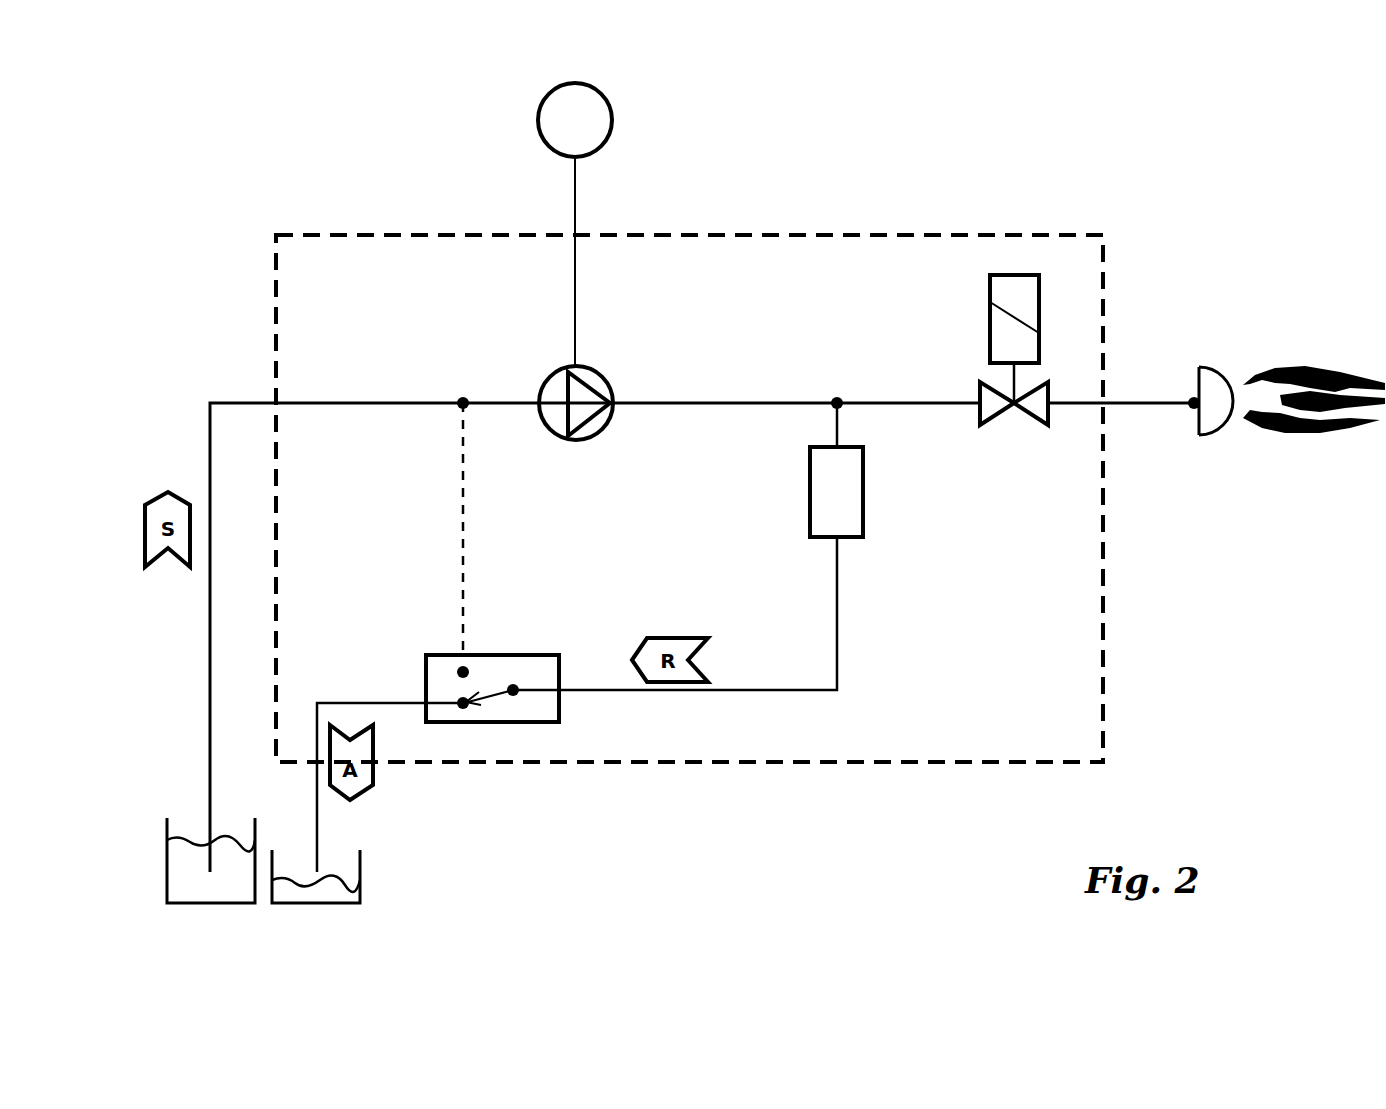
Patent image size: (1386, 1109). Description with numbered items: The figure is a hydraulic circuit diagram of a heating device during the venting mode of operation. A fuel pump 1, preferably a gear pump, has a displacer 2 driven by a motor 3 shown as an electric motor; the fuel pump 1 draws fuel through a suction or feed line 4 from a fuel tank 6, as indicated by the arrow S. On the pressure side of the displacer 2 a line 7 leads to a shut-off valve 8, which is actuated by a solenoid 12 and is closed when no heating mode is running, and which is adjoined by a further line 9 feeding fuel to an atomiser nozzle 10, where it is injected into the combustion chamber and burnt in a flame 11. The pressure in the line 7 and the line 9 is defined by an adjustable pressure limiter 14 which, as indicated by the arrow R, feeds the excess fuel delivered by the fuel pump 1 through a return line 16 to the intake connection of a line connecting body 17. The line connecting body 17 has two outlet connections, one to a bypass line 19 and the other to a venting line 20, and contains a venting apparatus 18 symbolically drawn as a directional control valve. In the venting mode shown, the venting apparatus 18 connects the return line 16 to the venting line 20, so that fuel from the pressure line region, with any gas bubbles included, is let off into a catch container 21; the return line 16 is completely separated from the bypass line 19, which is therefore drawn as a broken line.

The fuel pump 1 is at (878, 196).
The displacer 2 is at (592, 428).
The motor 3 is at (602, 127).
The feed line 4 is at (210, 638).
The fuel tank 6 is at (213, 890).
The line 7 is at (680, 403).
The shut-off valve 8 is at (993, 412).
The line 9 is at (1165, 405).
The atomiser nozzle 10 is at (1210, 423).
The flame 11 is at (1292, 425).
The solenoid 12 is at (1000, 330).
The adjustable pressure limiter 14 is at (823, 510).
The return line 16 is at (712, 690).
The line connecting body 17 is at (523, 662).
The venting apparatus 18 is at (493, 700).
The bypass line 19 is at (462, 510).
The venting line 20 is at (368, 700).
The catch container 21 is at (360, 892).